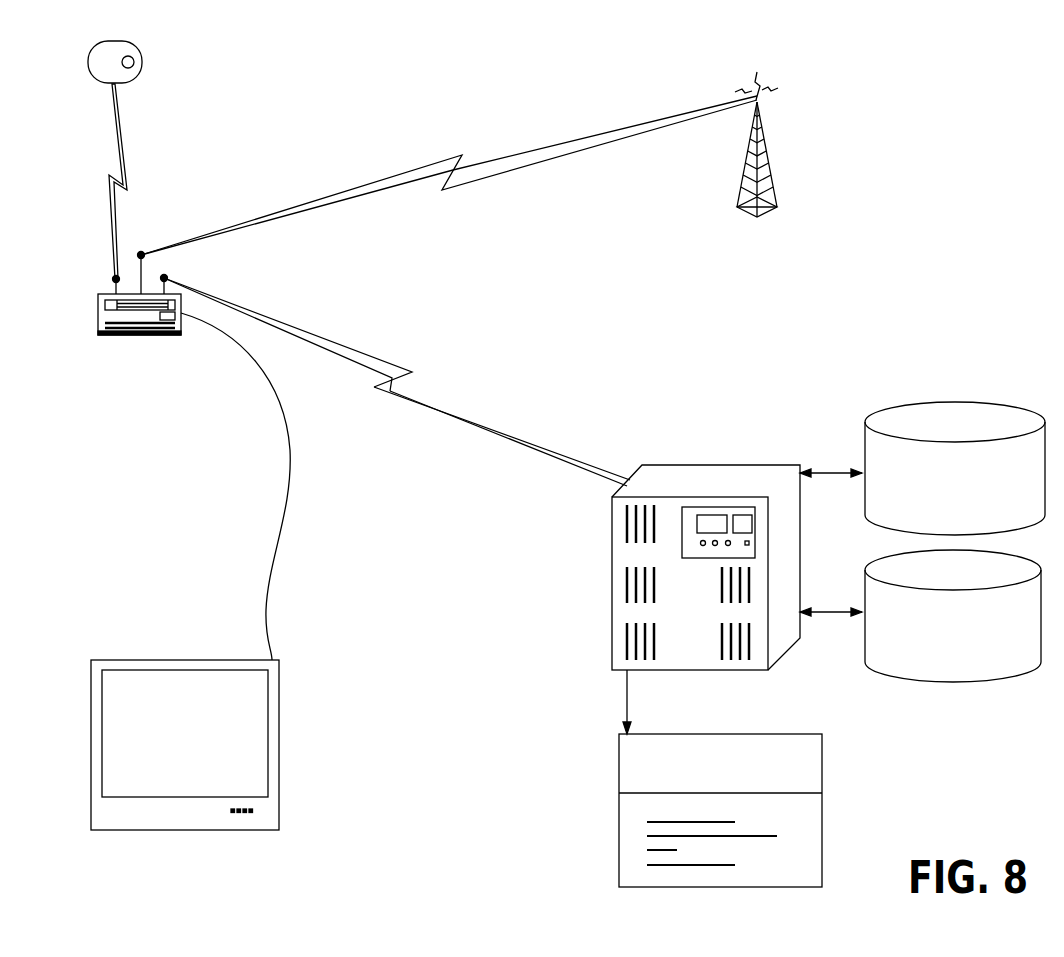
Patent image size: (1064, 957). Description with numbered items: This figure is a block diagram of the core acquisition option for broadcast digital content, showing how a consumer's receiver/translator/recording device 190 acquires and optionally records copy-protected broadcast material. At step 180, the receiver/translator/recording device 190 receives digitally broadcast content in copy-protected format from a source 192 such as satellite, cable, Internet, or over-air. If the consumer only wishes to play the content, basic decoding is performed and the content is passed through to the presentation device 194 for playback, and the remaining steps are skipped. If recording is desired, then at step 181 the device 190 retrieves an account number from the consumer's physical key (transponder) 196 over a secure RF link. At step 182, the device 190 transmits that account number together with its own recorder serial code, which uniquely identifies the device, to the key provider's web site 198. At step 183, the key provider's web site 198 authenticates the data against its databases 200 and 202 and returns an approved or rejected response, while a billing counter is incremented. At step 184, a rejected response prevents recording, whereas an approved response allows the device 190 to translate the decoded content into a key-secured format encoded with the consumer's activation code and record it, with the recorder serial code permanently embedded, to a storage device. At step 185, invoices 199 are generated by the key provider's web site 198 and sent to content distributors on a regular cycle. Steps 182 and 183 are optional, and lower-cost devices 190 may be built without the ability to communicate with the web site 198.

The step of receiving broadcast content 180 is at (448, 195).
The step of retrieving account number 181 is at (80, 189).
The step of transmitting account number and recorder serial code 182 is at (287, 317).
The step of authenticating data 183 is at (502, 453).
The step of recording key-secured content 184 is at (158, 477).
The step of generating invoices 185 is at (589, 706).
The receiver/translator/recording device 190 is at (140, 335).
The source 192 is at (770, 165).
The presentation device 194 is at (159, 660).
The physical key (transponder) 196 is at (141, 53).
The key provider's web site 198 is at (703, 465).
The invoices 199 is at (822, 813).
The database 200 is at (922, 402).
The database 202 is at (978, 682).